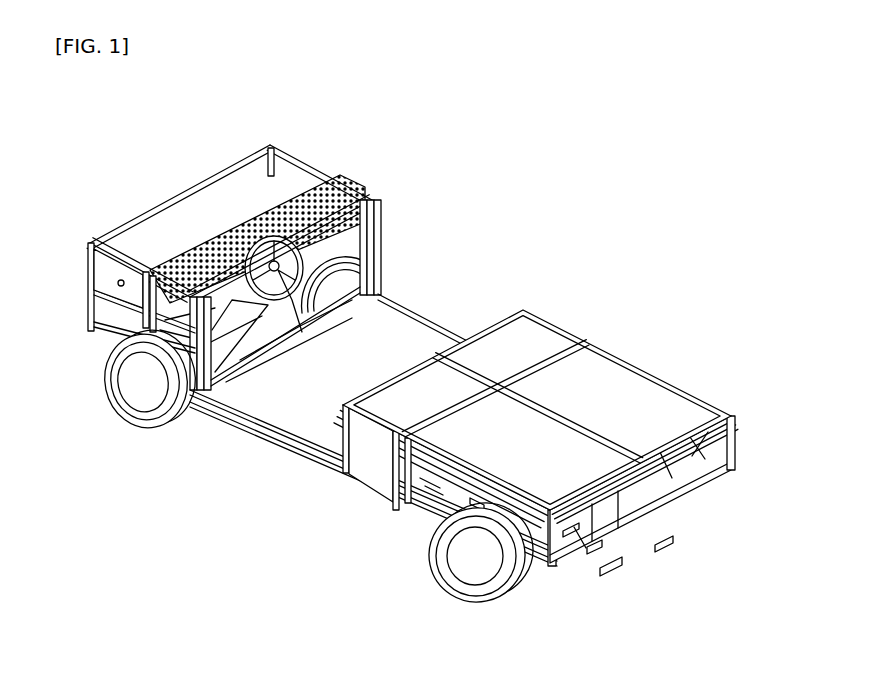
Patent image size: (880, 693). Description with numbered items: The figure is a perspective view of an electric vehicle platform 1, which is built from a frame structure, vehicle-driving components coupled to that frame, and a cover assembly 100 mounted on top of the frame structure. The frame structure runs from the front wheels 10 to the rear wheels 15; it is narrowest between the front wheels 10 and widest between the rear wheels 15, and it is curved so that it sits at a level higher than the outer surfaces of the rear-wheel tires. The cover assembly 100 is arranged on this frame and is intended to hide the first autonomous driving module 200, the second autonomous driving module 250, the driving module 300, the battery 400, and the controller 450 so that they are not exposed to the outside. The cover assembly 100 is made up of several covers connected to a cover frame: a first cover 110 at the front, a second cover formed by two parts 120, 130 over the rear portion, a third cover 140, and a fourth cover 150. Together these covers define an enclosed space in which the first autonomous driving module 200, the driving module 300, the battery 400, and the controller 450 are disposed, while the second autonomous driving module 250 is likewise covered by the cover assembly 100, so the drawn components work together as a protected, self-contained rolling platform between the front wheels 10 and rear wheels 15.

The electric vehicle platform 1 is at (677, 323).
The front wheels 10 is at (113, 387).
The rear wheels 15 is at (437, 560).
The cover assembly 100 is at (692, 384).
The first cover 110 is at (143, 227).
The second cover 120 is at (390, 413).
The second cover 130 is at (553, 343).
The third cover 140 is at (578, 488).
The fourth cover 150 is at (263, 417).
The first autonomous driving module 200 is at (289, 141).
The second autonomous driving module 250 is at (647, 525).
The driving module 300 is at (366, 182).
The battery 400 is at (407, 301).
The controller 450 is at (551, 315).